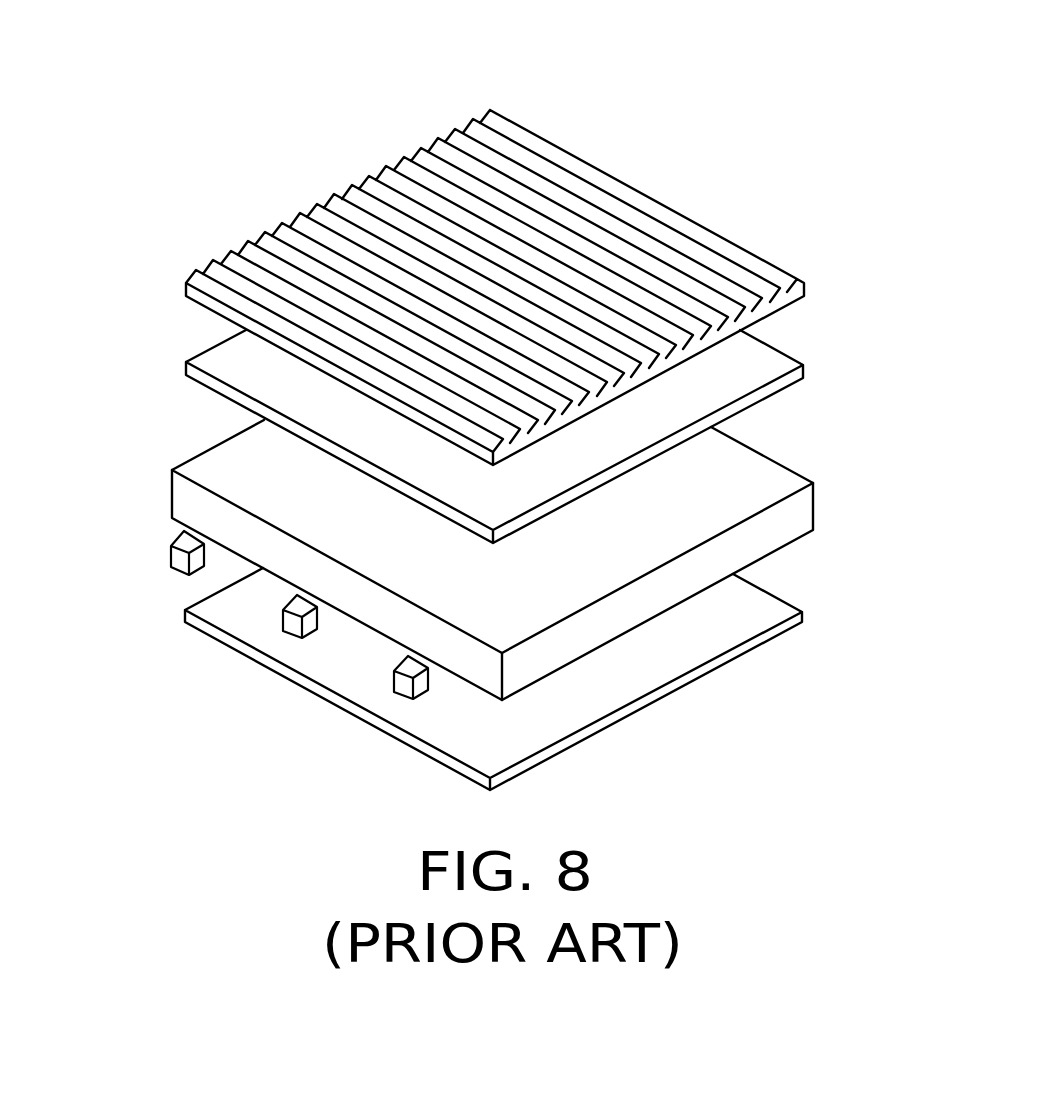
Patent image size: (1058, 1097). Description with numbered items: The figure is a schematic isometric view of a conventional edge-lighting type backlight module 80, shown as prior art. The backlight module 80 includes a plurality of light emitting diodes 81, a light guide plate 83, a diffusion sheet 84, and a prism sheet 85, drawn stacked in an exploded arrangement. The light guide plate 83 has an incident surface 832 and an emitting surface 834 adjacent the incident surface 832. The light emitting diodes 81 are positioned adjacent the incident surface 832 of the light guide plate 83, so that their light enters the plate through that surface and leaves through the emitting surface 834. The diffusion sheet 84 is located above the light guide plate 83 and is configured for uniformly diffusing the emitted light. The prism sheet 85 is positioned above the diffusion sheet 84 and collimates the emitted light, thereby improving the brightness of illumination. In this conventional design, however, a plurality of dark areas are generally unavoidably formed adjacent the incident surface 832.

The backlight module 80 is at (549, 47).
The light emitting diodes 81 is at (183, 553).
The light guide plate 83 is at (503, 560).
The incident surface 832 is at (193, 498).
The emitting surface 834 is at (818, 504).
The diffusion sheet 84 is at (762, 367).
The prism sheet 85 is at (793, 291).